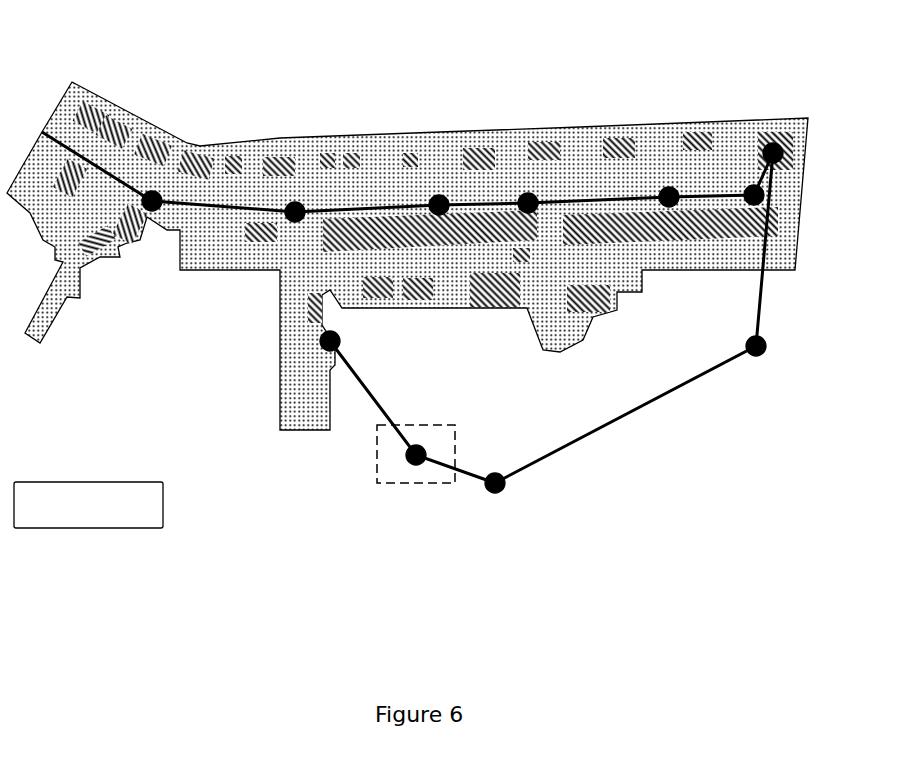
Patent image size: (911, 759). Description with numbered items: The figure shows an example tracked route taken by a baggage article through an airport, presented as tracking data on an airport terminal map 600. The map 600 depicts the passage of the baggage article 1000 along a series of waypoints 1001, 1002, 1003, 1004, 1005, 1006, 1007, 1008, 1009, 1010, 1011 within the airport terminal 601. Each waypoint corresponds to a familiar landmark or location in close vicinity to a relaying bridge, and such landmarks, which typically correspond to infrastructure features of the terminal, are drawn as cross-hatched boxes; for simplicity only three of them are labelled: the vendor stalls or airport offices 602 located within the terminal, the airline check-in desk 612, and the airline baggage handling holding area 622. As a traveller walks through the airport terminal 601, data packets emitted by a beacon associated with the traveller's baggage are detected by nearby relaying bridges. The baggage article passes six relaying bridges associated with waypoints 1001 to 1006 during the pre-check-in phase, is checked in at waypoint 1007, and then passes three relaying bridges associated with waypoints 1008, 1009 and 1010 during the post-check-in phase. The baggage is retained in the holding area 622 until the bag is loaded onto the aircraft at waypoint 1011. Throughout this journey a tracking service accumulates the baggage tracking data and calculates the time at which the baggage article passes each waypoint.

The airport terminal map 600 is at (132, 383).
The airport terminal 601 is at (143, 117).
The vendor stalls or airport offices 602 is at (152, 225).
The airline check-in desk 612 is at (760, 124).
The airline baggage handling holding area 622 is at (455, 428).
The baggage article 1000 is at (65, 100).
The waypoint 1001 is at (152, 212).
The waypoint 1002 is at (295, 204).
The waypoint 1003 is at (439, 197).
The waypoint 1004 is at (528, 195).
The waypoint 1005 is at (669, 189).
The waypoint 1006 is at (762, 192).
The waypoint 1007 is at (773, 143).
The waypoint 1008 is at (760, 353).
The waypoint 1009 is at (500, 490).
The waypoint 1010 is at (420, 462).
The waypoint 1011 is at (338, 338).